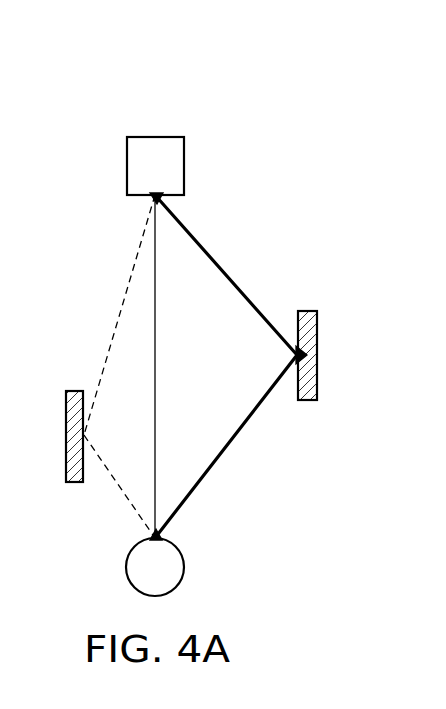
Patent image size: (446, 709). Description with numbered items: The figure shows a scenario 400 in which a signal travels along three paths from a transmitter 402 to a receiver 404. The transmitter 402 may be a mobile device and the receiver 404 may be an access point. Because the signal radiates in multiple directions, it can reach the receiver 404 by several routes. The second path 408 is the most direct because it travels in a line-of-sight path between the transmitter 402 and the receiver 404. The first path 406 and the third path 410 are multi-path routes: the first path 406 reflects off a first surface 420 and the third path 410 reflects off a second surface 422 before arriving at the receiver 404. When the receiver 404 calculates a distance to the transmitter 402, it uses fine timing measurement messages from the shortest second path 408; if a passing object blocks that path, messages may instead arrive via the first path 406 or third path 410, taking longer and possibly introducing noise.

The scenario 400 is at (112, 95).
The transmitter 402 is at (184, 149).
The receiver 404 is at (184, 567).
The first path 406 is at (134, 257).
The second path 408 is at (155, 378).
The third path 410 is at (218, 262).
The first surface 420 is at (75, 390).
The second surface 422 is at (307, 310).